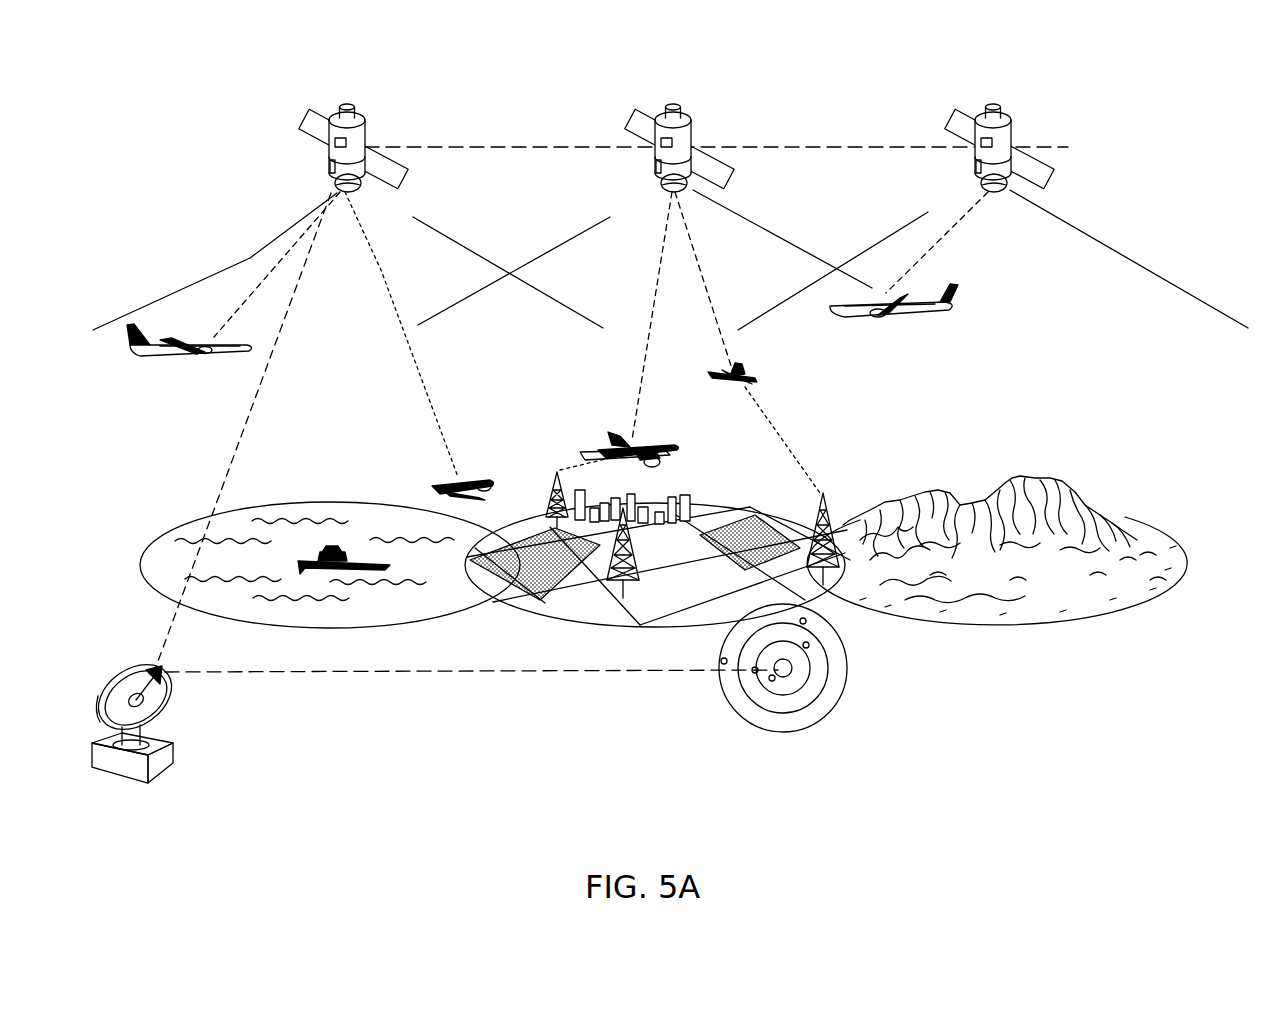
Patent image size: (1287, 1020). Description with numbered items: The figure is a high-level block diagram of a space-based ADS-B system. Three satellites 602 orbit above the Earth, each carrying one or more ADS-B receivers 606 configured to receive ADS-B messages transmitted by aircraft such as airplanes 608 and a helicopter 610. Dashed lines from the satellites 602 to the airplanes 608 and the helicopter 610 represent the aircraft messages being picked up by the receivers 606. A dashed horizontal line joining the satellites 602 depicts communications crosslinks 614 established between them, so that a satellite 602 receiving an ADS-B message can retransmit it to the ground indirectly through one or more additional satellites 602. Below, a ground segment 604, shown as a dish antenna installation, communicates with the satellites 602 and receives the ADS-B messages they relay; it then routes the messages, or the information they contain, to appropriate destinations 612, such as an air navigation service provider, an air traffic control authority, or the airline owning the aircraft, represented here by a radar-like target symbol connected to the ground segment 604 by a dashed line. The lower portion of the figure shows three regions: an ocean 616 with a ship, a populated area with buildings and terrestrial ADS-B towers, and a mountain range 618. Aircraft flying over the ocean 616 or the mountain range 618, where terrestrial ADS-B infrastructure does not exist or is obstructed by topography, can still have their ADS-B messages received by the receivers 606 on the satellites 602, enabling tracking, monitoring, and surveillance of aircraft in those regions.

The satellite 602 is at (347, 103).
The ground segment 604 is at (164, 744).
The receiver 606 is at (354, 188).
The airplane 608 is at (184, 358).
The helicopter 610 is at (472, 479).
The destination 612 is at (847, 671).
The communications crosslink 614 is at (522, 149).
The ocean 616 is at (355, 502).
The mountain range 618 is at (1056, 485).